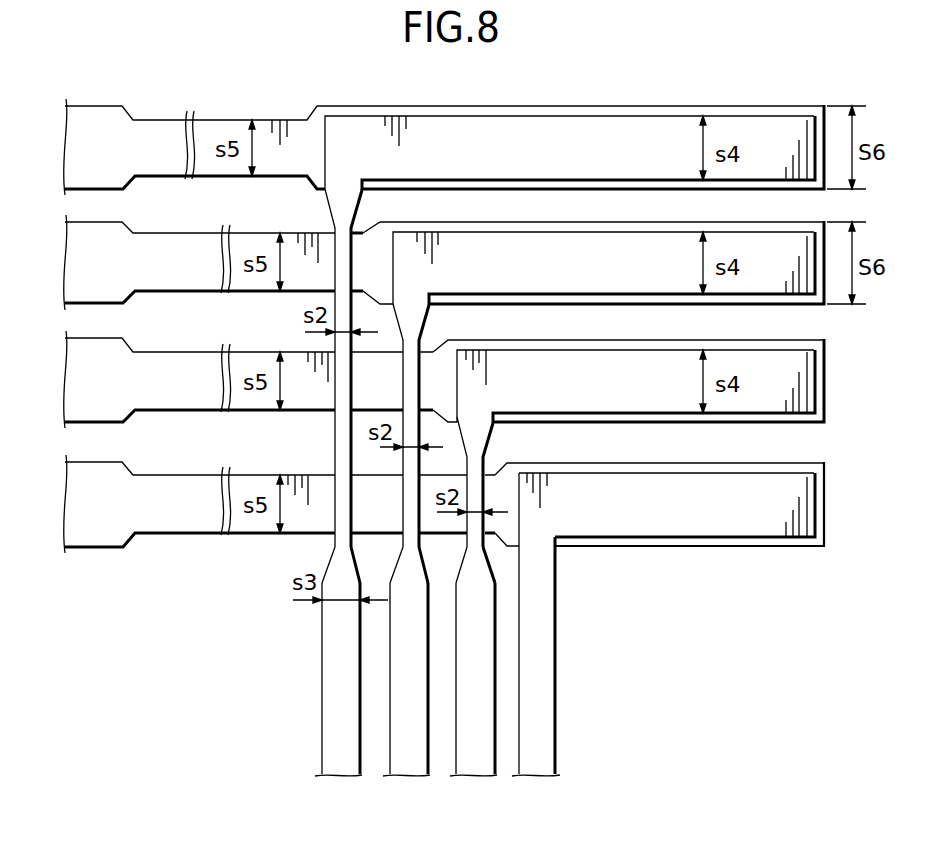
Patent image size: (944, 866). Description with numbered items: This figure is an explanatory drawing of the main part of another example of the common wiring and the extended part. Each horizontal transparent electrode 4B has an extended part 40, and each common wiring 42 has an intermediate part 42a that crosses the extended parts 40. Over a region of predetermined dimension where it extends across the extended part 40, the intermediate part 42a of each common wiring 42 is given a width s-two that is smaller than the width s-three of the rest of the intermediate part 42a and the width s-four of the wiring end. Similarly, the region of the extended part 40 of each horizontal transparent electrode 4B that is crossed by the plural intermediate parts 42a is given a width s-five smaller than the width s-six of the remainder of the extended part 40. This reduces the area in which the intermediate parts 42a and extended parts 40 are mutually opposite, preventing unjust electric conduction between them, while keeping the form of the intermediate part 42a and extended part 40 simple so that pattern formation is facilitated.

The horizontal transparent electrode 4B is at (110, 114).
The extended part 40 is at (312, 120).
The common wiring 42 is at (405, 722).
The intermediate part 42a is at (405, 635).